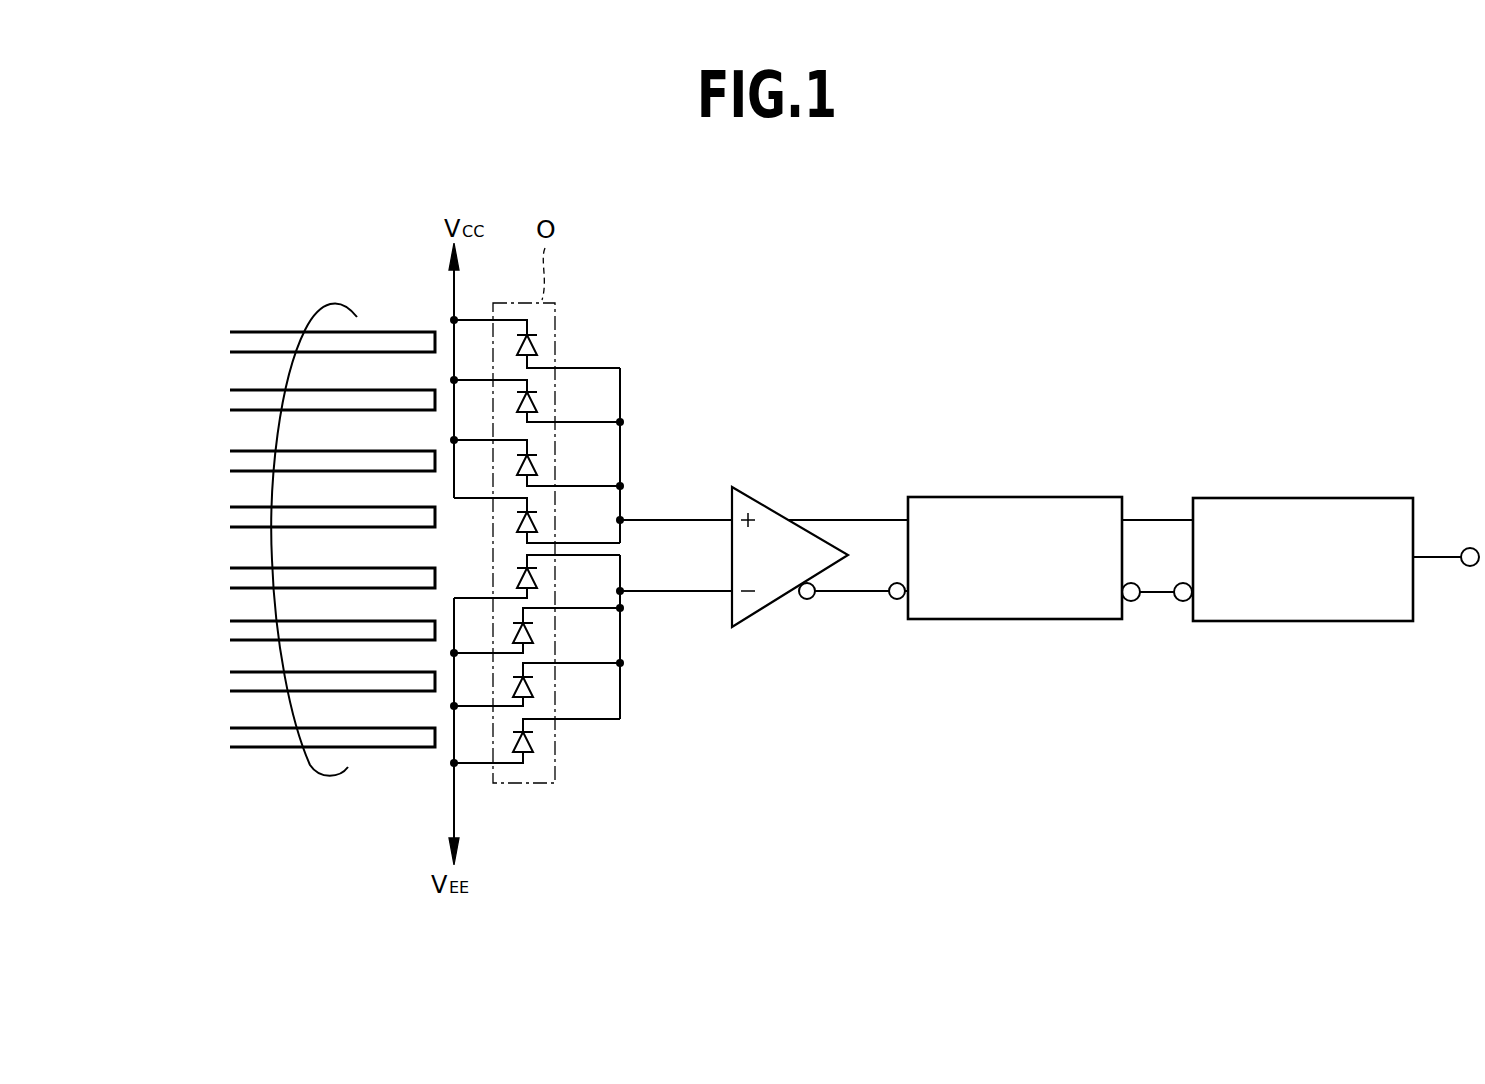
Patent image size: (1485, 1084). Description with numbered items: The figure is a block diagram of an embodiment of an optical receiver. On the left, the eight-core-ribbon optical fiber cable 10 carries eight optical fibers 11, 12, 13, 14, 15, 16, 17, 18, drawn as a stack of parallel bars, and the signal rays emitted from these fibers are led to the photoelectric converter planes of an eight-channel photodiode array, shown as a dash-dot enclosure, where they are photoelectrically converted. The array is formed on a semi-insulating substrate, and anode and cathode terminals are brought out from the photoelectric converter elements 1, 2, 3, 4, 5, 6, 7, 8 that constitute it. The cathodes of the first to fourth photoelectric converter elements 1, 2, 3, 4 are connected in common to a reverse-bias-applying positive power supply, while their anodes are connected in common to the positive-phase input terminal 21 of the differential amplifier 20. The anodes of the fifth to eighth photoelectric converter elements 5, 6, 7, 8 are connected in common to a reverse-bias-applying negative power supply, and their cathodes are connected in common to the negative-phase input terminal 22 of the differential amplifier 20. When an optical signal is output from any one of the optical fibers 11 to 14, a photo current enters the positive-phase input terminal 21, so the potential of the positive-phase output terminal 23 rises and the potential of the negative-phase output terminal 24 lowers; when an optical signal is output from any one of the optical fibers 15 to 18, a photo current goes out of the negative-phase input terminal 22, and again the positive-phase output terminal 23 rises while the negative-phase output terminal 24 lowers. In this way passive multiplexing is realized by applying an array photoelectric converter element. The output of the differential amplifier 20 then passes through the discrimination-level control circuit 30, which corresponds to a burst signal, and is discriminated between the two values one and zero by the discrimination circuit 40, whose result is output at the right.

The first photoelectric converter element 1 is at (540, 345).
The second photoelectric converter element 2 is at (540, 405).
The third photoelectric converter element 3 is at (540, 468).
The fourth photoelectric converter element 4 is at (538, 523).
The fifth photoelectric converter element 5 is at (537, 579).
The sixth photoelectric converter element 6 is at (535, 635).
The seventh photoelectric converter element 7 is at (535, 690).
The eighth photoelectric converter element 8 is at (535, 746).
The 8-core-ribbon optical fiber cable 10 is at (333, 300).
The optical fiber 11 is at (228, 342).
The optical fiber 12 is at (228, 400).
The optical fiber 13 is at (228, 461).
The optical fiber 14 is at (228, 517).
The optical fiber 15 is at (228, 578).
The optical fiber 16 is at (228, 630).
The optical fiber 17 is at (228, 681).
The optical fiber 18 is at (228, 737).
The differential amplifier 20 is at (762, 503).
The positive-phase input terminal 21 is at (683, 518).
The negative-phase input terminal 22 is at (683, 593).
The positive-phase output terminal 23 is at (859, 518).
The negative-phase output terminal 24 is at (808, 600).
The discrimination-level control circuit 30 is at (1061, 497).
The discrimination circuit 40 is at (1360, 497).